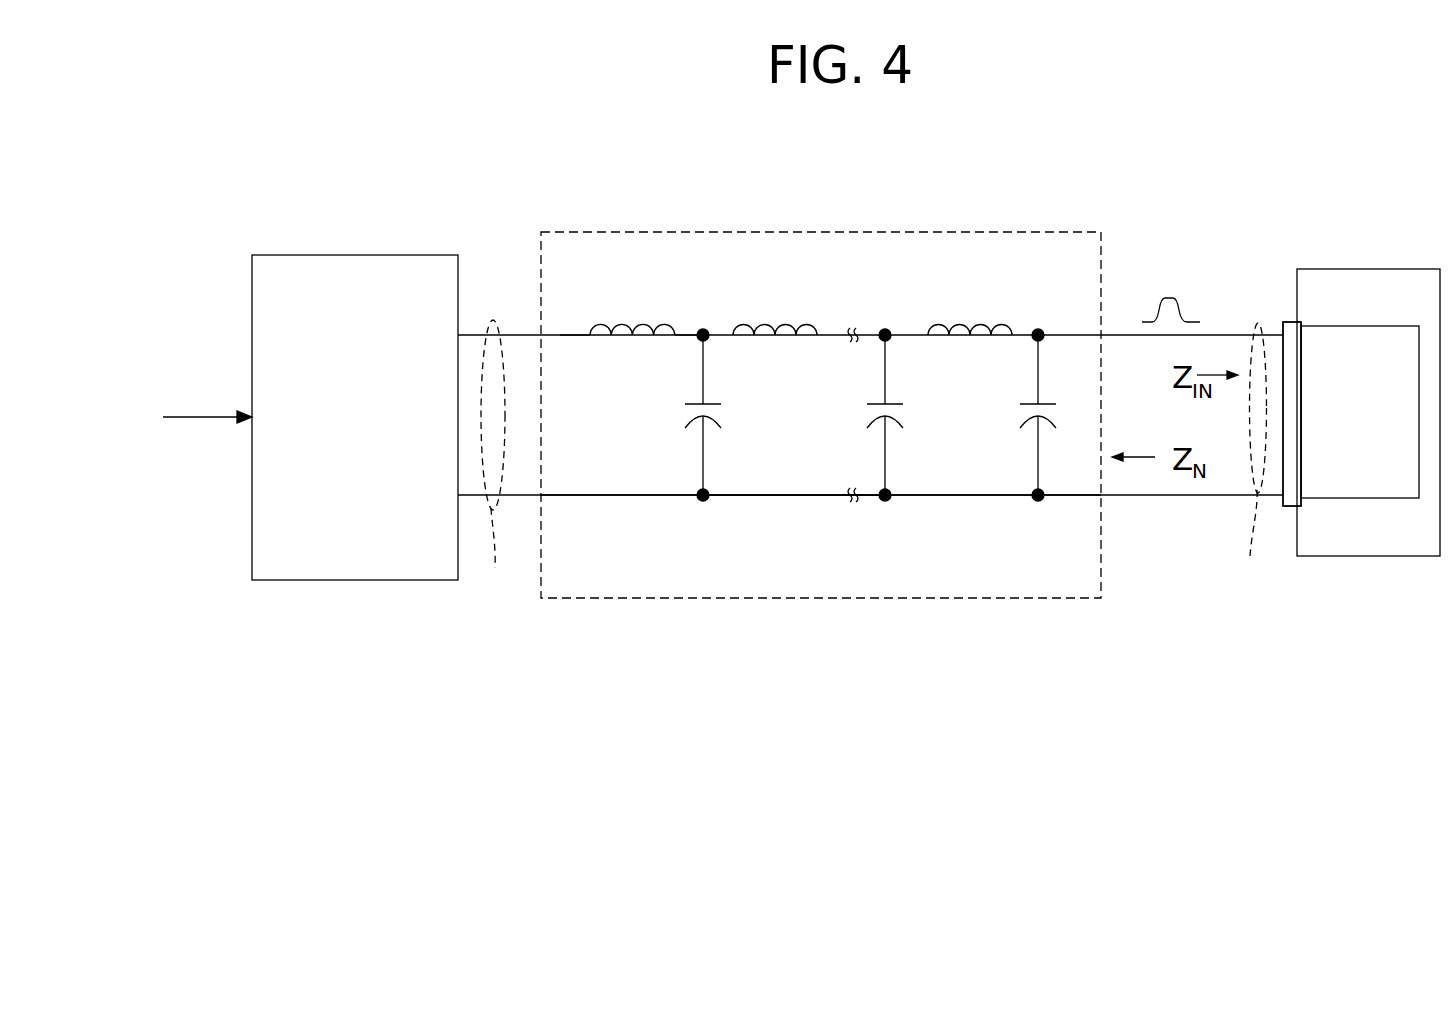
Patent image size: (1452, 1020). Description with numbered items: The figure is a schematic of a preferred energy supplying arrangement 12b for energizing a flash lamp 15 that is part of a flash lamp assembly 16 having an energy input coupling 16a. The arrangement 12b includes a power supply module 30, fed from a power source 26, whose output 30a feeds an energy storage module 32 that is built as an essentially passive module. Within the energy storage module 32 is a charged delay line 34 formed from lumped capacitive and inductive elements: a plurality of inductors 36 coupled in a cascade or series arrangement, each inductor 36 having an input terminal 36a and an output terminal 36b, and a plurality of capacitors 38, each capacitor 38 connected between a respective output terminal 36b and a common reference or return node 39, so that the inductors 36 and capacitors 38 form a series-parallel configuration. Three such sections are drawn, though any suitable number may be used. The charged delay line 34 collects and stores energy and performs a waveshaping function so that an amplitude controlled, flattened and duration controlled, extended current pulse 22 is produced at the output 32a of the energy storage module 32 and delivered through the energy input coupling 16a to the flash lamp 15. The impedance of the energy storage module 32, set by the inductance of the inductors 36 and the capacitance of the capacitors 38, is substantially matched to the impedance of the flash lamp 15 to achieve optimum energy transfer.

The energy supplying arrangement 12b is at (476, 692).
The flash lamp 15 is at (1341, 498).
The flash lamp assembly 16 is at (1395, 556).
The energy input coupling 16a is at (1288, 506).
The current pulse 22 is at (1170, 282).
The power source 26 is at (200, 418).
The power supply module 30 is at (347, 580).
The output of power supply module 30a is at (494, 461).
The energy storage module 32 is at (1043, 232).
The output of the energy storage module 32a is at (1236, 456).
The charged delay line 34 is at (674, 542).
The inductor 36 is at (624, 361).
The input terminal 36a is at (575, 318).
The output terminal 36b is at (685, 319).
The capacitor 38 is at (693, 424).
The common reference node 39 is at (795, 498).